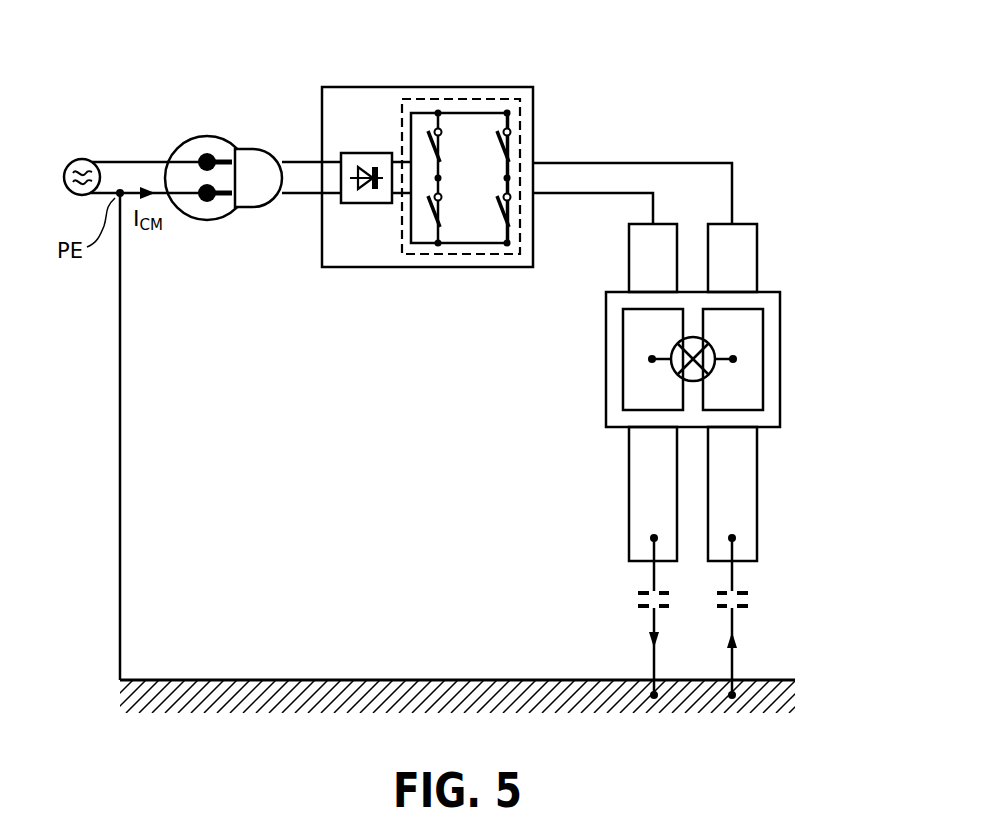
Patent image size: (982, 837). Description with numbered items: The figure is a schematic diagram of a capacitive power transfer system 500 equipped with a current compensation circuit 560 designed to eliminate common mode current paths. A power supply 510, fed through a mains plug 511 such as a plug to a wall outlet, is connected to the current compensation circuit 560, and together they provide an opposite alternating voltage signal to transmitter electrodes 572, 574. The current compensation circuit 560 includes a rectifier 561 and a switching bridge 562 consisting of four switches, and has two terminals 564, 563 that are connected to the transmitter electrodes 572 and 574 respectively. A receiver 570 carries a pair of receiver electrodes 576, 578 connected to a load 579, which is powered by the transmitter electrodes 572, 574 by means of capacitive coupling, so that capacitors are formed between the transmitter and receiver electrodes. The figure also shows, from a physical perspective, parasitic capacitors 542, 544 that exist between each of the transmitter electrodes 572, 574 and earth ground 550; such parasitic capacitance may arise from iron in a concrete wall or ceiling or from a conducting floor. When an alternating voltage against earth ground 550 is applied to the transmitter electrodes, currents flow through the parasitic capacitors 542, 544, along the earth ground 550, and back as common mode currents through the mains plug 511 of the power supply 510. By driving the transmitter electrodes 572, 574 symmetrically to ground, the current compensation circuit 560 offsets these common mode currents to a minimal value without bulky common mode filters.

The capacitive power transfer system 500 is at (767, 112).
The power supply 510 is at (83, 158).
The mains plug 511 is at (207, 136).
The parasitic capacitor 542 is at (638, 587).
The parasitic capacitor 544 is at (748, 587).
The earth ground 550 is at (418, 695).
The current compensation circuit 560 is at (365, 87).
The rectifier 561 is at (368, 153).
The switching bridge 562 is at (465, 98).
The terminal 563 is at (535, 163).
The terminal 564 is at (535, 193).
The receiver 570 is at (606, 320).
The transmitter electrode 572 is at (629, 490).
The transmitter electrode 574 is at (757, 490).
The receiver electrode 576 is at (623, 375).
The receiver electrode 578 is at (767, 373).
The load 579 is at (706, 342).